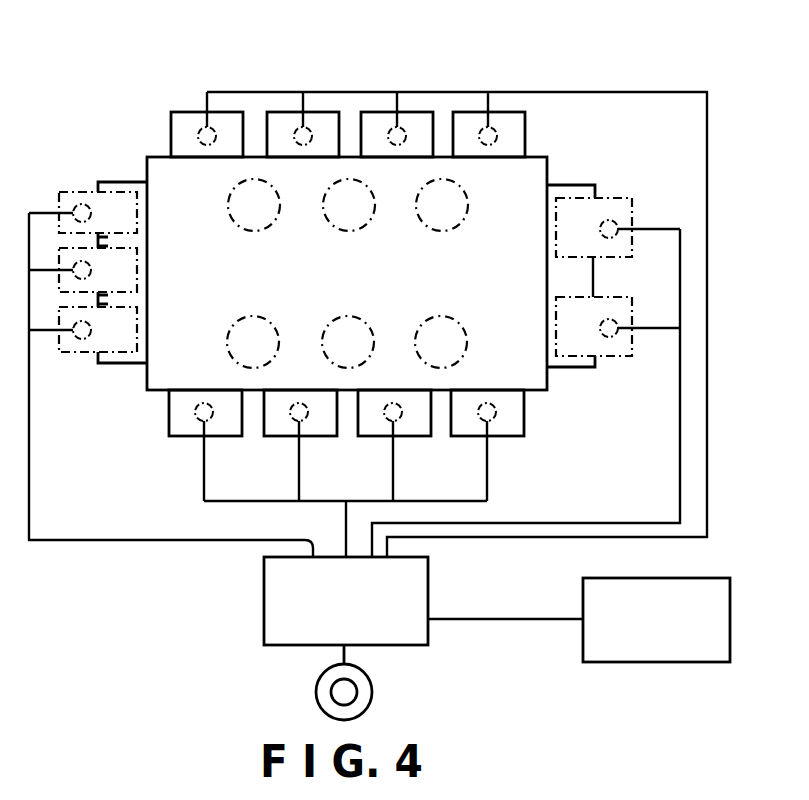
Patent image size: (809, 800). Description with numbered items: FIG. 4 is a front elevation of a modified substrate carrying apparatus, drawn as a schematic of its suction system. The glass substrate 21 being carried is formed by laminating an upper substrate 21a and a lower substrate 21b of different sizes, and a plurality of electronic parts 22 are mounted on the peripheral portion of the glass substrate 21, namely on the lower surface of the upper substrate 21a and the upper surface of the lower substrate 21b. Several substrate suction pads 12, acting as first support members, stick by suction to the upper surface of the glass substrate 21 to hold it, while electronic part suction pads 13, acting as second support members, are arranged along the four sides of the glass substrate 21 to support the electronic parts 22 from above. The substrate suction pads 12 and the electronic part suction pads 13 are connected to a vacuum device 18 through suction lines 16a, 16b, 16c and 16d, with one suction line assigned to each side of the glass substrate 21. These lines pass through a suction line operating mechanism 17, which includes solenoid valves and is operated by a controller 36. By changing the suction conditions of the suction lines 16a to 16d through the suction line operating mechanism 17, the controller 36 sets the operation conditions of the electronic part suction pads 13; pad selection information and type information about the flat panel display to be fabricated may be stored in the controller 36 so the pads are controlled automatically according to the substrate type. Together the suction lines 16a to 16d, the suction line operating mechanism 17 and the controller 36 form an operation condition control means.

The substrate suction pad 12 is at (466, 196).
The electronic part suction pad 13 is at (497, 135).
The suction line 16a is at (346, 516).
The suction line 16b is at (650, 92).
The suction line 16c is at (165, 540).
The suction line 16d is at (680, 415).
The suction line operating mechanism 17 is at (428, 601).
The vacuum device 18 is at (372, 692).
The glass substrate 21 is at (608, 400).
The upper substrate 21a is at (533, 393).
The lower substrate 21b is at (575, 369).
The electronic part 22 is at (519, 437).
The controller 36 is at (661, 662).